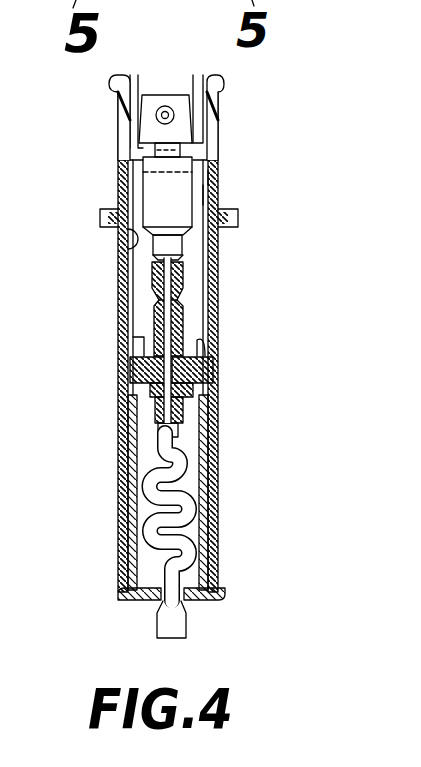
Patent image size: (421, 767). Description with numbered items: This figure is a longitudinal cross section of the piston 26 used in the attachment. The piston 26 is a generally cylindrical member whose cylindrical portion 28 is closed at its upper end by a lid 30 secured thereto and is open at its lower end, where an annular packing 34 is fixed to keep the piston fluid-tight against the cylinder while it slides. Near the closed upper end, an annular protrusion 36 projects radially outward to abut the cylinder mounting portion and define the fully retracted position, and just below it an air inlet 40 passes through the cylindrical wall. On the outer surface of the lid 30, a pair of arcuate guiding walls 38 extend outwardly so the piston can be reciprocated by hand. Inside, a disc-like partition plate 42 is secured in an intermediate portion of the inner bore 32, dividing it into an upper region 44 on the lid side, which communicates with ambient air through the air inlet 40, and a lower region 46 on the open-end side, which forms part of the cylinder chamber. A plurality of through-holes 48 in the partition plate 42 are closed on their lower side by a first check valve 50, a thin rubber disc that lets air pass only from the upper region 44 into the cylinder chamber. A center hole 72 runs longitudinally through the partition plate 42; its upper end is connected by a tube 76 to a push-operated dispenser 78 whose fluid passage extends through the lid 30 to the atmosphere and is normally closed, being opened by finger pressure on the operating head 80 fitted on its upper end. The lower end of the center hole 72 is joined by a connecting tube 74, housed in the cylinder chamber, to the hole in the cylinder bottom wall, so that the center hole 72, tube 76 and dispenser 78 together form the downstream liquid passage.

The piston 26 is at (219, 178).
The cylindrical portion 28 is at (217, 268).
The lid 30 is at (140, 161).
The inner bore 32 is at (128, 244).
The annular packing 34 is at (125, 578).
The annular protrusion 36 is at (238, 218).
The guiding walls 38 is at (122, 104).
The air inlet 40 is at (218, 237).
The partition plate 42 is at (184, 332).
The upper region 44 is at (120, 191).
The lower region 46 is at (140, 458).
The through-holes 48 is at (130, 364).
The first check valve 50 is at (140, 405).
The center hole 72 is at (140, 338).
The connecting tube 74 is at (192, 507).
The tube 76 is at (178, 312).
The dispenser 78 is at (211, 196).
The operating head 80 is at (156, 100).